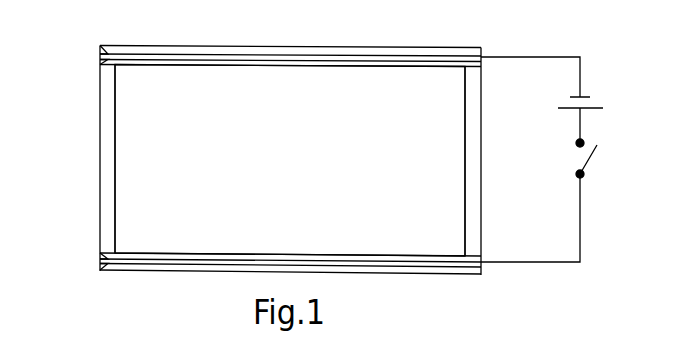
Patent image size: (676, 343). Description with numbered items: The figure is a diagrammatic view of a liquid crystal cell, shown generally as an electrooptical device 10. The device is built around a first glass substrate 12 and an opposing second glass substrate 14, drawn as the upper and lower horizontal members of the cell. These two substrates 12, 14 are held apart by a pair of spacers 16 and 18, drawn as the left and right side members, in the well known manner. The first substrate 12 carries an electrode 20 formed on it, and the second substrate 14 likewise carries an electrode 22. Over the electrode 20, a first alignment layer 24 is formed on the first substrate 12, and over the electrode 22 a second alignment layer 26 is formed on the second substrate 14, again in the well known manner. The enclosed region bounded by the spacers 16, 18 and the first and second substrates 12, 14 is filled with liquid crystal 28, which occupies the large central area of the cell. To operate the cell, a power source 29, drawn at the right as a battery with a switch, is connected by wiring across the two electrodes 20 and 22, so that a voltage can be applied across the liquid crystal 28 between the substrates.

The electrooptical device 10 is at (351, 162).
The first glass substrate 12 is at (134, 50).
The second glass substrate 14 is at (226, 267).
The spacer 16 is at (110, 147).
The spacer 18 is at (470, 220).
The electrode 20 is at (100, 48).
The electrode 22 is at (117, 262).
The first alignment layer 24 is at (100, 62).
The second alignment layer 26 is at (107, 256).
The liquid crystal 28 is at (416, 229).
The power source 29 is at (594, 105).